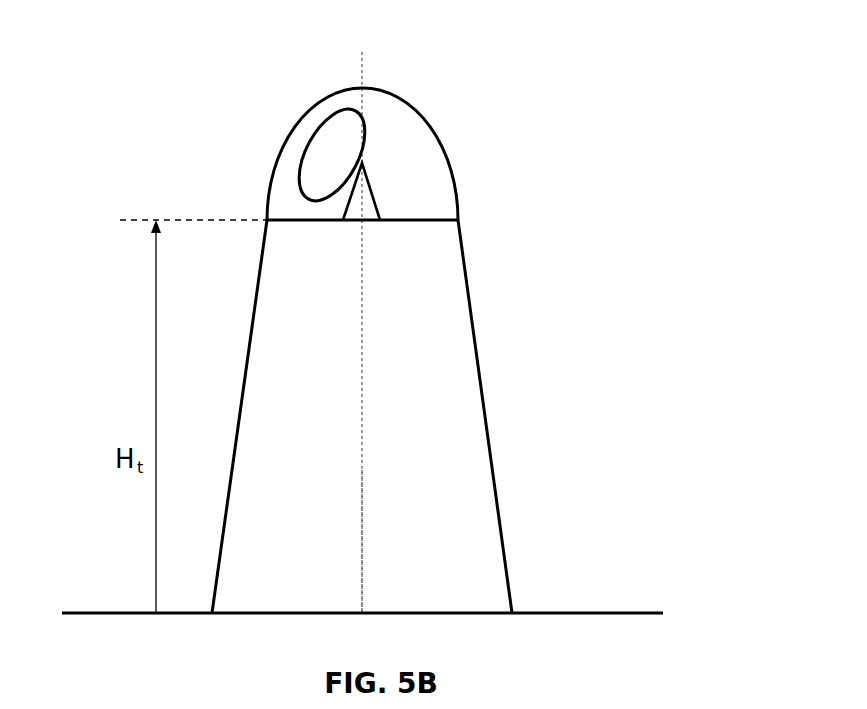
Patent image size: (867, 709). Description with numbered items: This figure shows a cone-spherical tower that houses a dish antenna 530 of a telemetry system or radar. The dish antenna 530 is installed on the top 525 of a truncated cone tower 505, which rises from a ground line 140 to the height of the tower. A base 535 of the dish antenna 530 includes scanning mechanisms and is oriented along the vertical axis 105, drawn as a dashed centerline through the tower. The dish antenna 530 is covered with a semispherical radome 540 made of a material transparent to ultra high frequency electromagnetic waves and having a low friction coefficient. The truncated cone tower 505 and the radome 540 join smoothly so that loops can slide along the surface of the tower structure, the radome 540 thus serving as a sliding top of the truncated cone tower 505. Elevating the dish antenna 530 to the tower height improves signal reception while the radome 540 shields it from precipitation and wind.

The vertical axis 105 is at (352, 578).
The substrate 140 is at (612, 612).
The truncated cone tower 505 is at (455, 433).
The top 525 is at (327, 221).
The dish antenna 530 is at (322, 157).
The base 535 is at (378, 197).
The semispherical radome 540 is at (388, 103).